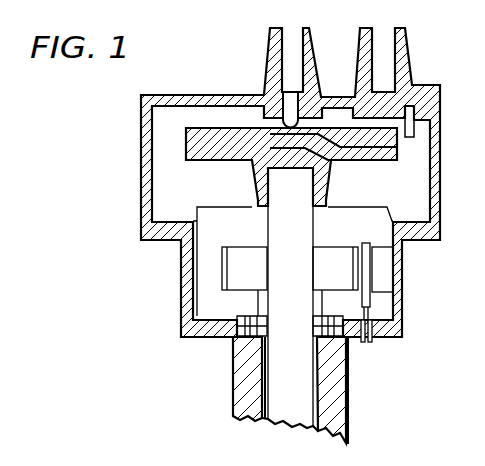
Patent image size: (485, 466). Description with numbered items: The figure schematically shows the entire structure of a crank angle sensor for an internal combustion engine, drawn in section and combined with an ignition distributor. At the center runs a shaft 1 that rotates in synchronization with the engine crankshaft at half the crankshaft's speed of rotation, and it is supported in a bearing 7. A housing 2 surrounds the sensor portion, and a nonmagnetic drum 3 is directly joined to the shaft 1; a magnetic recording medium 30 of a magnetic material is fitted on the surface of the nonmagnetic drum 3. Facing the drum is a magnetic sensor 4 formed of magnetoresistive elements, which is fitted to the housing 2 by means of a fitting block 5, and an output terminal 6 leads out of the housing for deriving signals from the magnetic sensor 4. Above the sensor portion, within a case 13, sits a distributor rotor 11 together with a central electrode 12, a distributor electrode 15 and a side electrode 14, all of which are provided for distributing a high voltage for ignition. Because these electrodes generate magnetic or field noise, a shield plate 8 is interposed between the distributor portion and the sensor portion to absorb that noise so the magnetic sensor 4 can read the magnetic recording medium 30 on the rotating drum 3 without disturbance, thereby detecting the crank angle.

The shaft 1 is at (308, 398).
The housing 2 is at (240, 389).
The nonmagnetic drum 3 is at (232, 270).
The magnetic recording medium 30 is at (222, 283).
The magnetic sensor 4 is at (368, 263).
The fitting block 5 is at (383, 282).
The output terminal 6 is at (372, 338).
The bearing 7 is at (348, 355).
The shield plate 8 is at (199, 207).
The distributor rotor 11 is at (200, 130).
The central electrode 12 is at (285, 108).
The case 13 is at (143, 118).
The side electrode 14 is at (424, 127).
The distributor electrode 15 is at (398, 138).